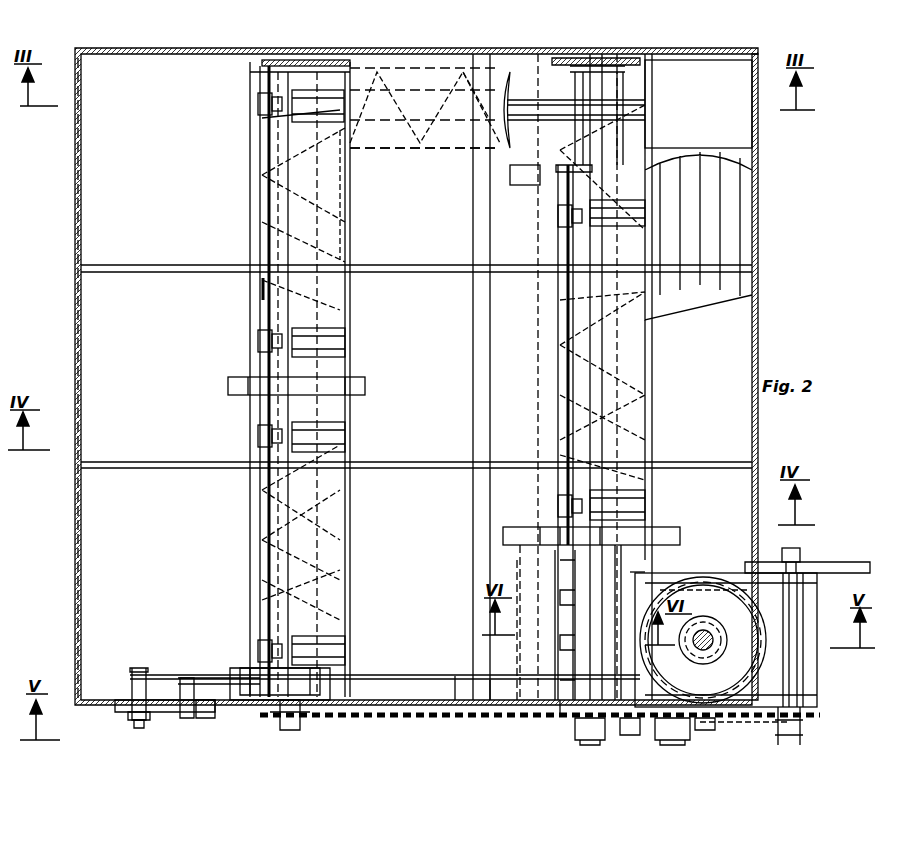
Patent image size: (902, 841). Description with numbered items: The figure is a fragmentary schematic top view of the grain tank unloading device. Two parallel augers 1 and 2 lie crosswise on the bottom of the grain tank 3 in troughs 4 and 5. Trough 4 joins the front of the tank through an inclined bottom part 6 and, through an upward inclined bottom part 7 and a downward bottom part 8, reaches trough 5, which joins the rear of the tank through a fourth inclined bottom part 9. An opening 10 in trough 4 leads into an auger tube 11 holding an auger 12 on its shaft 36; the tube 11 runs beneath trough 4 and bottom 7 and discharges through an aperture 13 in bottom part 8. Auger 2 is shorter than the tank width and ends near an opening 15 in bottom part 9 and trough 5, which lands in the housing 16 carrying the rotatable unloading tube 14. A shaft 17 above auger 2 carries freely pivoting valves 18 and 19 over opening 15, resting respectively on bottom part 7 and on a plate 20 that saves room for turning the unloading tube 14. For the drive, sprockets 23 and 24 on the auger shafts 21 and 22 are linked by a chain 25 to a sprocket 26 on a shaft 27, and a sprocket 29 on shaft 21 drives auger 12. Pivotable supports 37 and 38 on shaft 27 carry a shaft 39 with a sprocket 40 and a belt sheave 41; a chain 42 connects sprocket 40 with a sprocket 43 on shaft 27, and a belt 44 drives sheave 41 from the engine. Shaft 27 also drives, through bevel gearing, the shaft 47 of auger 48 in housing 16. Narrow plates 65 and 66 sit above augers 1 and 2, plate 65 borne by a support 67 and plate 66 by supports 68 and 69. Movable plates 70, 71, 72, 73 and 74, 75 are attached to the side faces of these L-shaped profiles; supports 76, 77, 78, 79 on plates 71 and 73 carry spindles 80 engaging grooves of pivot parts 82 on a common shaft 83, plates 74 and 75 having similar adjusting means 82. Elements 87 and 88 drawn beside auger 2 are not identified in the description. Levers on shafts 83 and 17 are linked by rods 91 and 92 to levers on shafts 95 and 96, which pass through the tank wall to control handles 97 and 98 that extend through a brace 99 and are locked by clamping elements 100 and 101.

The auger 1 is at (322, 238).
The auger 2 is at (640, 400).
The grain tank 3 is at (752, 325).
The trough 4 is at (330, 690).
The trough 5 is at (640, 556).
The inclined bottom part 6 is at (95, 182).
The inclined bottom part 7 is at (455, 665).
The bottom part 8 is at (495, 670).
The fourth inclined bottom part 9 is at (752, 445).
The opening 10 is at (300, 130).
The auger tube 11 is at (384, 150).
The auger 12 is at (418, 132).
The aperture 13 is at (512, 128).
The unloading tube 14 is at (750, 665).
The opening 15 is at (620, 600).
The housing 16 is at (750, 602).
The shaft 17 is at (560, 376).
The valve 18 is at (520, 658).
The valve 19 is at (552, 720).
The plate 20 is at (670, 580).
The shaft 21 is at (330, 548).
The shaft 22 is at (615, 366).
The sprocket 23 is at (316, 722).
The sprocket 24 is at (572, 728).
The chain 25 is at (416, 722).
The sprocket 26 is at (665, 735).
The shaft 27 is at (705, 732).
The sprocket 29 is at (262, 64).
The shaft 36 is at (478, 120).
The pivotable support 37 is at (817, 703).
The pivotable support 38 is at (792, 588).
The shaft 39 is at (800, 606).
The sprocket 40 is at (795, 740).
The belt sheave 41 is at (796, 548).
The chain 42 is at (745, 730).
The sprocket 43 is at (625, 738).
The belt 44 is at (848, 572).
The shaft 47 is at (713, 640).
The auger 48 is at (705, 600).
The plate 65 is at (338, 292).
The plate 66 is at (550, 292).
The support 67 is at (355, 389).
The support 68 is at (520, 185).
The support 69 is at (515, 535).
The plate 70 is at (262, 226).
The plate 71 is at (328, 194).
The plate 72 is at (262, 560).
The plate 73 is at (338, 598).
The plate 74 is at (560, 449).
The plate 75 is at (630, 448).
The support 76 is at (320, 124).
The support 77 is at (328, 346).
The support 78 is at (330, 440).
The support 79 is at (328, 652).
The spindle 80 is at (258, 116).
The pivot part 82 is at (272, 96).
The common shaft 83 is at (265, 284).
The block 87 is at (635, 216).
The block 88 is at (660, 538).
The rod 91 is at (232, 700).
The rod 92 is at (416, 660).
The shaft 95 is at (188, 678).
The shaft 96 is at (132, 690).
The control handle 97 is at (200, 712).
The control handle 98 is at (134, 720).
The brace 99 is at (116, 710).
The clamping element 100 is at (185, 718).
The clamping element 101 is at (138, 724).